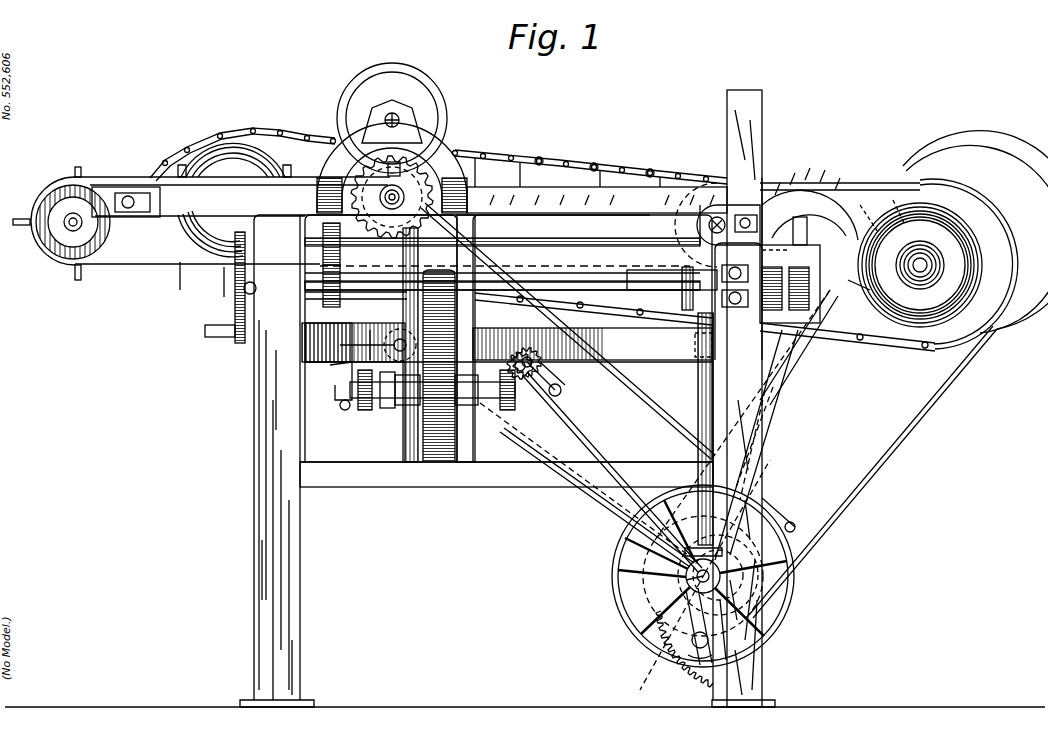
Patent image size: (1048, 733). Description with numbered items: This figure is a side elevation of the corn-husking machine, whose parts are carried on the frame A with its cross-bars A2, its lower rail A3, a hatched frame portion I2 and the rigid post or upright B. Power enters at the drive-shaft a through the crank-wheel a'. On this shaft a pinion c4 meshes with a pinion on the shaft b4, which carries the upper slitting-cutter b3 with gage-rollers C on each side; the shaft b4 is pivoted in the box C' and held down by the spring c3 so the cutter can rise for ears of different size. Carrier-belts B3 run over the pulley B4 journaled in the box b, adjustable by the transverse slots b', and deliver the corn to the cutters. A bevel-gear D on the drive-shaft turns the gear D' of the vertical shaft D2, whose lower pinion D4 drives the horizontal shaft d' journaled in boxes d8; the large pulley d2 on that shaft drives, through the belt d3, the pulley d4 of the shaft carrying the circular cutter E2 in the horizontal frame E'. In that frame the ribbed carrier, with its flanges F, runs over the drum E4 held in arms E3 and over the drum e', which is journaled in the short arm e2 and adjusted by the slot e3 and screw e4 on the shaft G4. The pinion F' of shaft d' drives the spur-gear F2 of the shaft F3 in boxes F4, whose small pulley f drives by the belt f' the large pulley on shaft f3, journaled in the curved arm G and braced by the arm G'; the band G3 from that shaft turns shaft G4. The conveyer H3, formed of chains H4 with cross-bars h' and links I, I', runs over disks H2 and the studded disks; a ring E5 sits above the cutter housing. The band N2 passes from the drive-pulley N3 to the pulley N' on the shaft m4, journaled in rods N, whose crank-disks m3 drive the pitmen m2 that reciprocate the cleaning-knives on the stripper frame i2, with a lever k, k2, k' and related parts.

The frame A is at (770, 455).
The cross-bars A2 is at (318, 278).
The lower frame rail A3 is at (506, 474).
The hatched frame portion I2 is at (312, 322).
The post or upright B is at (770, 110).
The arms E3 is at (45, 198).
The drum E4 is at (55, 243).
The drum e' is at (396, 235).
The disks H2 is at (231, 200).
The conveyor chain I is at (438, 154).
The chain link h' is at (550, 146).
The endless carrier or conveyer H3 is at (598, 164).
The chains H4 is at (653, 169).
The horizontal frame E' is at (522, 167).
The ring E5 is at (392, 118).
The saw-toothed or circular cutter E2 is at (408, 170).
The pulley d4 is at (430, 212).
The drive-pulley N3 is at (480, 244).
The parallel vertical rods N is at (502, 272).
The drive-shaft a is at (477, 264).
The shaft b4 is at (508, 269).
The spring c3 is at (341, 244).
The pinion c4 is at (341, 287).
The large band-pulley N' is at (439, 377).
The band N2 is at (378, 345).
The crank-wheel a' is at (214, 287).
The pitmen m2 is at (343, 410).
The crank-disks m3 is at (380, 410).
The shaft m4 is at (395, 398).
The frame i2 is at (330, 380).
The lever gear k2 is at (556, 378).
The rod k' is at (612, 472).
The band or belt d3 is at (645, 376).
The second beveled pinion D4 is at (698, 552).
The bevel-gear D is at (672, 279).
The gear D' is at (691, 434).
The vertical shaft D2 is at (697, 398).
The short arm e2 is at (722, 215).
The elongated slot e3 is at (742, 214).
The screw e4 is at (752, 220).
The shaft G4 is at (712, 200).
The box C' is at (810, 204).
The rollers C is at (794, 211).
The cutter b3 is at (770, 260).
The pulley B4 is at (810, 262).
The box b is at (847, 312).
The transverse slots b' is at (756, 445).
The carrier-belts B3 is at (790, 345).
The arm G is at (920, 239).
The small drive-pulley f is at (839, 443).
The band G3 is at (830, 185).
The arm G' is at (915, 286).
The chain I' is at (977, 239).
The belt or band f' is at (851, 374).
The shaft f3 is at (866, 284).
The ribs or flanges F is at (703, 576).
The pinion F' is at (703, 576).
The horizontal shaft d' is at (705, 575).
The large belt-pulley d2 is at (793, 524).
The hub k is at (665, 575).
The boxes d8 is at (688, 592).
The spur-gear F2 is at (676, 680).
The horizontal shaft F3 is at (692, 640).
The boxes F4 is at (700, 653).